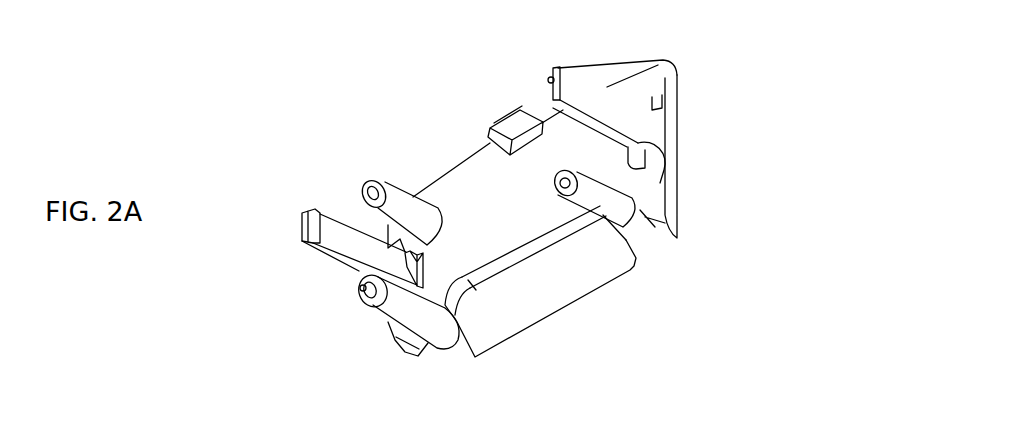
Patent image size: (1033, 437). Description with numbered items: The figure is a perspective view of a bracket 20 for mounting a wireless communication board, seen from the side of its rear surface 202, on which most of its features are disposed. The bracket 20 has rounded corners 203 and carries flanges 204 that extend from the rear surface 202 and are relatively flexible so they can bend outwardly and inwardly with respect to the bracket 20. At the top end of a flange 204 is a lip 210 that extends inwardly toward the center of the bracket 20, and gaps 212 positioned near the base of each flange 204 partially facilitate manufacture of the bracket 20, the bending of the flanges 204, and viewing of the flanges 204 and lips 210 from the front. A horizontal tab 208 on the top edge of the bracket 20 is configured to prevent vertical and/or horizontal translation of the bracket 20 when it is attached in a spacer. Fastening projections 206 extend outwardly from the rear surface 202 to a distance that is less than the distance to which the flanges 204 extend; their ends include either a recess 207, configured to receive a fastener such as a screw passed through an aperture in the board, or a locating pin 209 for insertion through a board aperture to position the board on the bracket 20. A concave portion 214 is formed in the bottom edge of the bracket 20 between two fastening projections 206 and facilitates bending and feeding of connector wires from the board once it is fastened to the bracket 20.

The bracket 20 is at (263, 76).
The rear surface 202 is at (452, 185).
The rounded corners 203 is at (672, 65).
The flanges 204 is at (350, 260).
The fastening projections 206 is at (366, 190).
The recess 207 is at (570, 185).
The tab 208 is at (508, 125).
The locating pin 209 is at (364, 288).
The lips 210 is at (313, 225).
The gaps 212 is at (405, 250).
The concave portion 214 is at (561, 311).